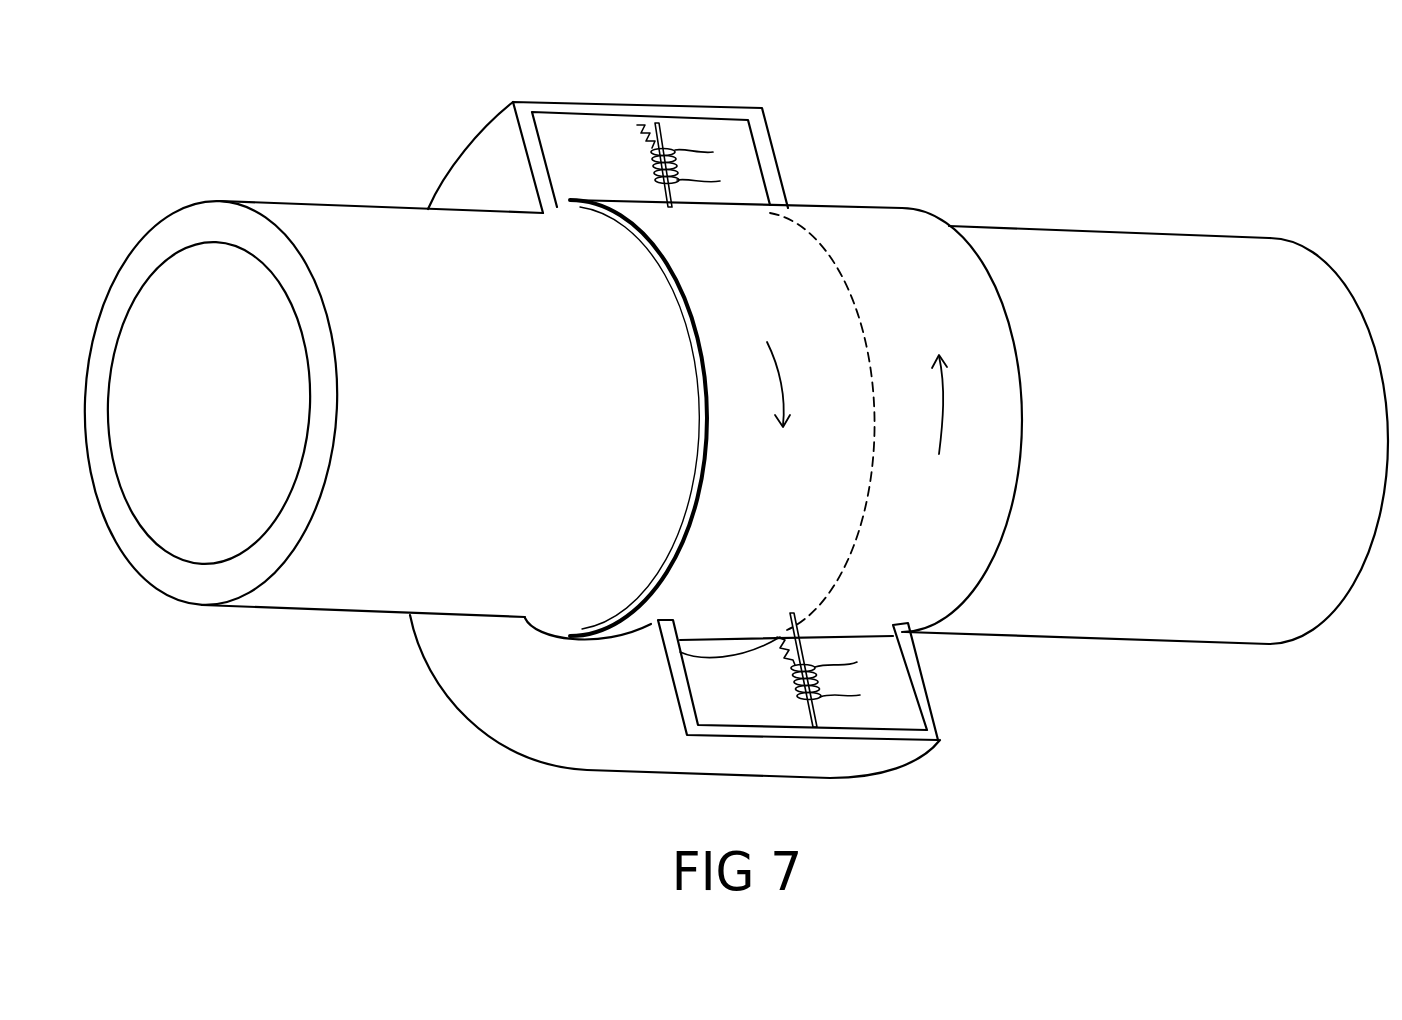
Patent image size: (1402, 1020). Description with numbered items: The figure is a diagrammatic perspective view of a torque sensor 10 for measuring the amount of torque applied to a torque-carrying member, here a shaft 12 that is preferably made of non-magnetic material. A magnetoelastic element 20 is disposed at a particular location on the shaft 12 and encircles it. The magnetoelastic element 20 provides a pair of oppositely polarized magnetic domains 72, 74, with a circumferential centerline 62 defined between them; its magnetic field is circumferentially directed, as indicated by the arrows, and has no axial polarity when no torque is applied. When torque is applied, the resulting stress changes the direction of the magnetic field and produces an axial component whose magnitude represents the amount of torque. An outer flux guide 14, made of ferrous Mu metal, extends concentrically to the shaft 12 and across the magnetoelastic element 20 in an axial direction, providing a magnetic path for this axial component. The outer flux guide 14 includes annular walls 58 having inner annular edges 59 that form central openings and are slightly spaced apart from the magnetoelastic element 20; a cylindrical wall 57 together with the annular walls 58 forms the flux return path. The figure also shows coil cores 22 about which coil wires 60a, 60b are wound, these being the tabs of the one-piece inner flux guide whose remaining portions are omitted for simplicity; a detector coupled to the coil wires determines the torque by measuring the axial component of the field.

The torque sensor 10 is at (1036, 120).
The shaft 12 is at (1134, 233).
The outer flux guide 14 is at (675, 476).
The magnetoelastic element 20 is at (861, 221).
The coil cores 22 is at (673, 165).
The cylindrical wall 57 is at (837, 762).
The annular walls 58 is at (550, 703).
The inner annular edges 59 is at (637, 630).
The coil wire 60a is at (800, 687).
The coil wire 60b is at (647, 157).
The circumferential centerline 62 is at (833, 562).
The magnetic domain 72 is at (765, 498).
The magnetic domain 74 is at (941, 519).